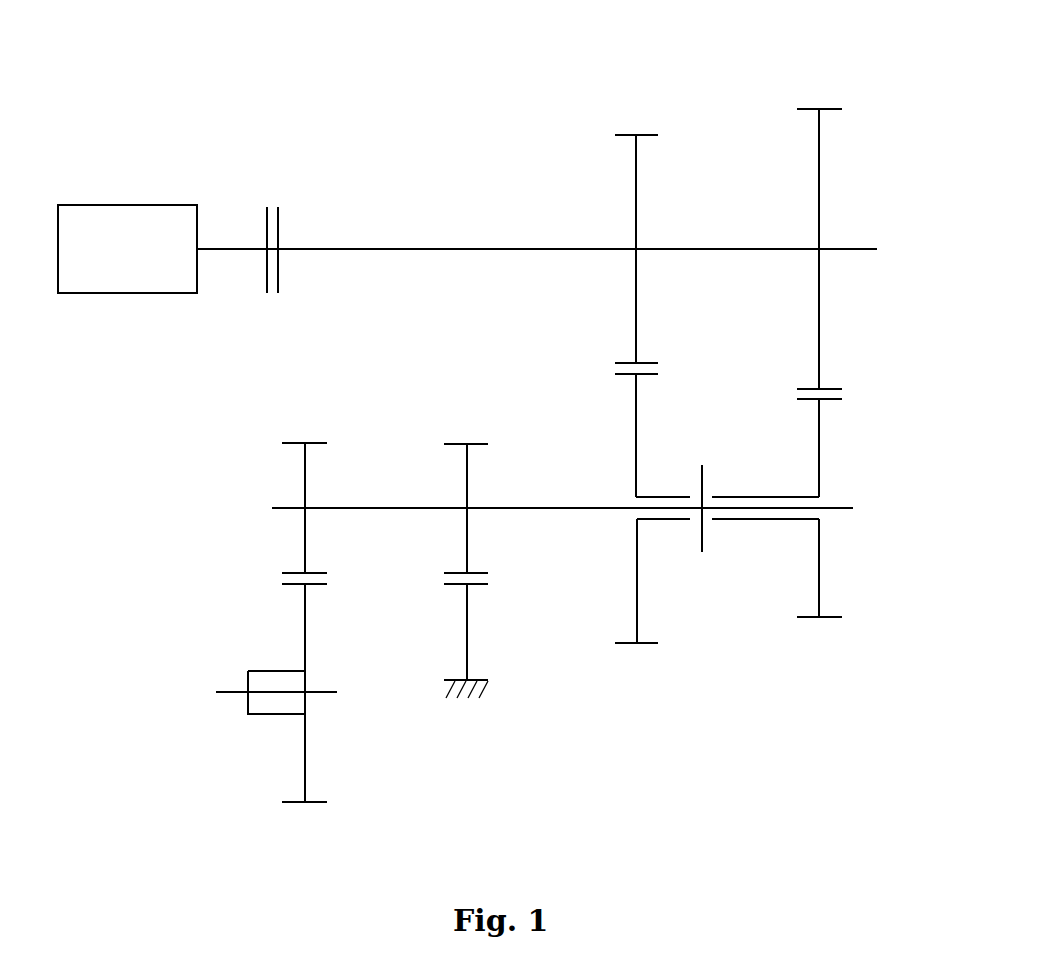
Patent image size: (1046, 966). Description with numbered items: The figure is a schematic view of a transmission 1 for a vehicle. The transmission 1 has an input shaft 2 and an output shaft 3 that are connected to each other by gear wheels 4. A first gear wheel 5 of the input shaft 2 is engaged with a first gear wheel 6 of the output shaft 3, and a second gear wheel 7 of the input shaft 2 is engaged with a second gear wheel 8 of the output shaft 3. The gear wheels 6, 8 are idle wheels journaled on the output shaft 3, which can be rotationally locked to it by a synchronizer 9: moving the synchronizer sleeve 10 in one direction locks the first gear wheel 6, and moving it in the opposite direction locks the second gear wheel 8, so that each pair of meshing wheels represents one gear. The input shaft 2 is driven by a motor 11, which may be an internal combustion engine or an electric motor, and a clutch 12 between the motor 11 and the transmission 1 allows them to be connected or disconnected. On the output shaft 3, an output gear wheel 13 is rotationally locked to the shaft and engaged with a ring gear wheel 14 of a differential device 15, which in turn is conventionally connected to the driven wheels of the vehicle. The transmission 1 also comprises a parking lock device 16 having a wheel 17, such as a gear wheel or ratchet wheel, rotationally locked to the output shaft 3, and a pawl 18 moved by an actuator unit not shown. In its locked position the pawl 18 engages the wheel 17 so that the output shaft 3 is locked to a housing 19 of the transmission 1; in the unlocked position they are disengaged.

The transmission 1 is at (408, 100).
The input shaft 2 is at (452, 250).
The output shaft 3 is at (845, 508).
The gear wheels 4 is at (860, 370).
The first gear wheel of the input shaft 5 is at (636, 307).
The first gear wheel of the output shaft 6 is at (637, 580).
The second gear wheel of the input shaft 7 is at (819, 172).
The second gear wheel of the output shaft 8 is at (819, 567).
The synchronizer 9 is at (747, 548).
The synchronizer sleeve 10 is at (702, 535).
The motor 11 is at (126, 205).
The clutch 12 is at (267, 225).
The output gear wheel 13 is at (305, 536).
The ring gear wheel 14 is at (305, 758).
The differential device 15 is at (193, 719).
The parking lock device 16 is at (532, 671).
The wheel 17 is at (467, 537).
The pawl 18 is at (467, 632).
The housing 19 is at (480, 690).